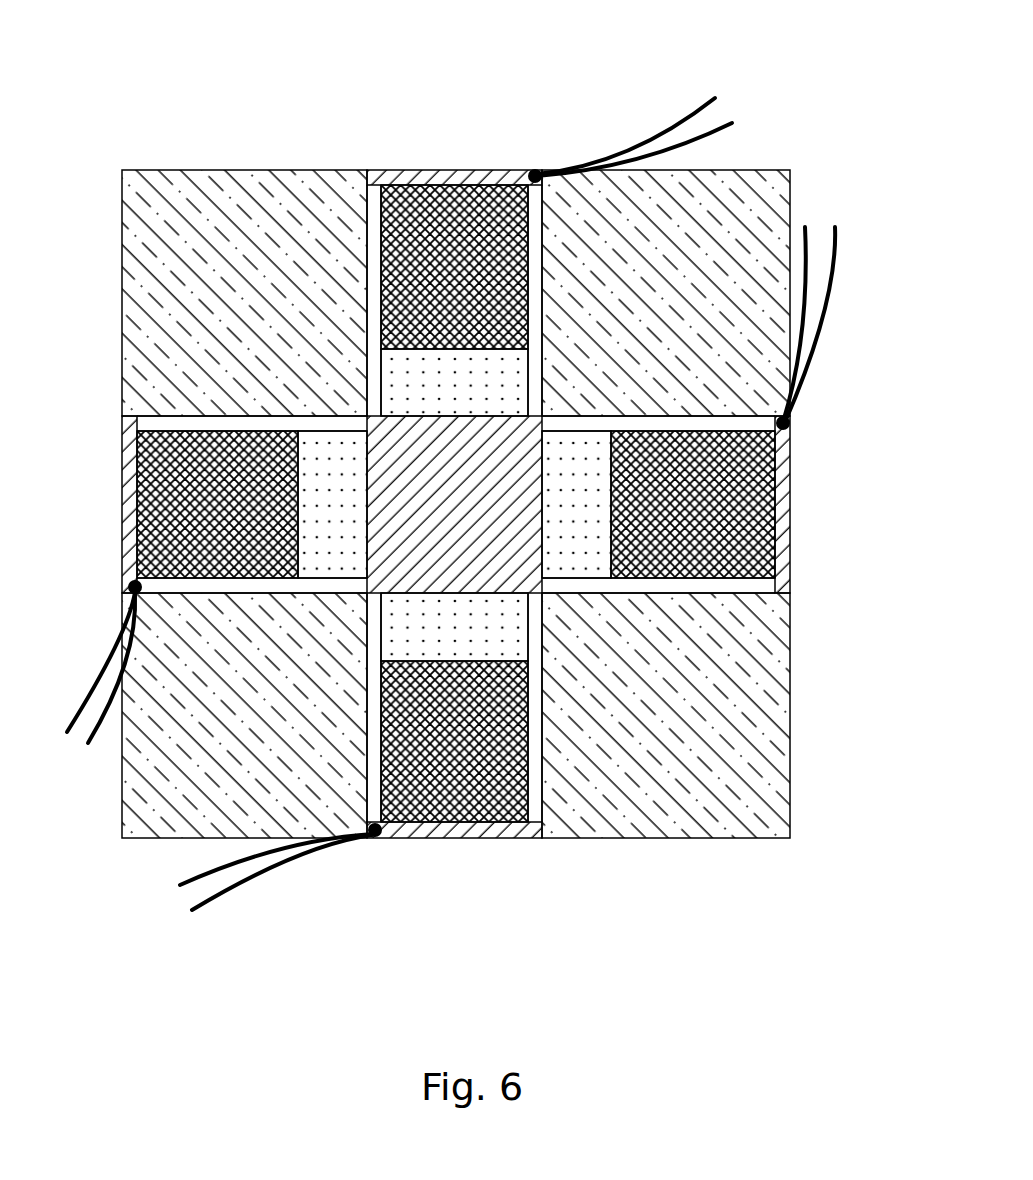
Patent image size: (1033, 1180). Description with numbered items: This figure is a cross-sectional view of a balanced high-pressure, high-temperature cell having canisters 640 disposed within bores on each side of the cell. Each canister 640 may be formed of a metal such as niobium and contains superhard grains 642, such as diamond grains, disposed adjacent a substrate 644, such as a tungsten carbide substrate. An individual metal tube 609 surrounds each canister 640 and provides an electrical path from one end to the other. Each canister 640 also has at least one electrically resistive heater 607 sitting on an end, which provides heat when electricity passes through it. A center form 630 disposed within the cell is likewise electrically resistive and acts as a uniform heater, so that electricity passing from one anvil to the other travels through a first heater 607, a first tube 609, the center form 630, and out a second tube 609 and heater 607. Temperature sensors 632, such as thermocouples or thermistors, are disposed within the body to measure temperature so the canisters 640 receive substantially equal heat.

The center form 630 is at (467, 515).
The temperature sensor 632 is at (537, 173).
The canister 640 is at (378, 287).
The superhard grains 642 is at (500, 388).
The substrate 644 is at (472, 258).
The electrically resistive heater 607 is at (783, 487).
The metal tube 609 is at (668, 587).